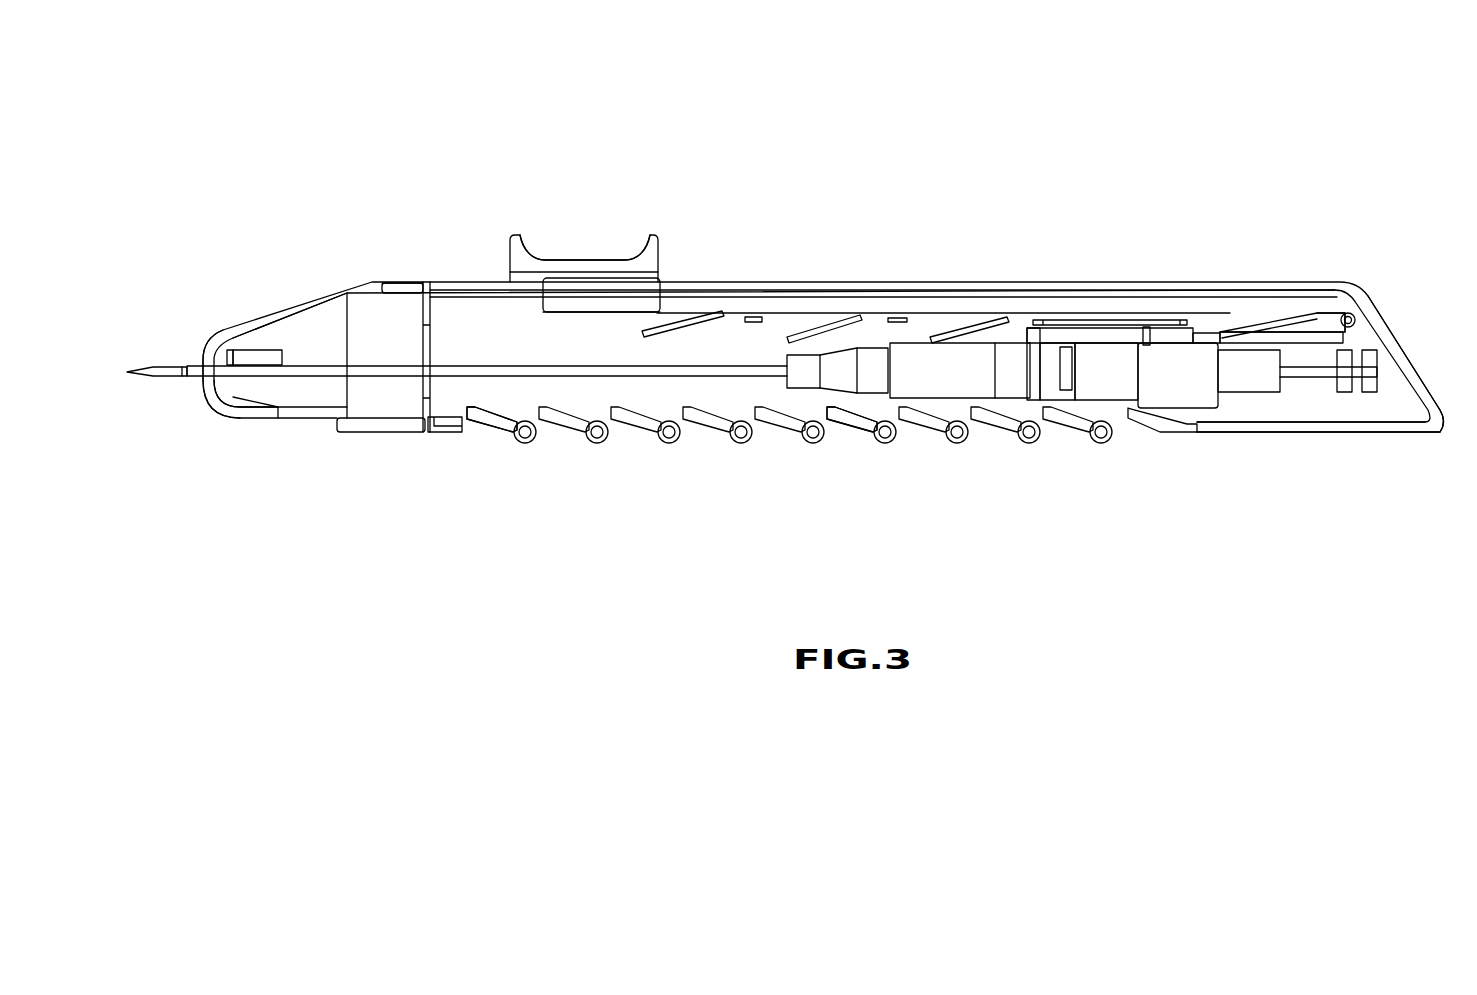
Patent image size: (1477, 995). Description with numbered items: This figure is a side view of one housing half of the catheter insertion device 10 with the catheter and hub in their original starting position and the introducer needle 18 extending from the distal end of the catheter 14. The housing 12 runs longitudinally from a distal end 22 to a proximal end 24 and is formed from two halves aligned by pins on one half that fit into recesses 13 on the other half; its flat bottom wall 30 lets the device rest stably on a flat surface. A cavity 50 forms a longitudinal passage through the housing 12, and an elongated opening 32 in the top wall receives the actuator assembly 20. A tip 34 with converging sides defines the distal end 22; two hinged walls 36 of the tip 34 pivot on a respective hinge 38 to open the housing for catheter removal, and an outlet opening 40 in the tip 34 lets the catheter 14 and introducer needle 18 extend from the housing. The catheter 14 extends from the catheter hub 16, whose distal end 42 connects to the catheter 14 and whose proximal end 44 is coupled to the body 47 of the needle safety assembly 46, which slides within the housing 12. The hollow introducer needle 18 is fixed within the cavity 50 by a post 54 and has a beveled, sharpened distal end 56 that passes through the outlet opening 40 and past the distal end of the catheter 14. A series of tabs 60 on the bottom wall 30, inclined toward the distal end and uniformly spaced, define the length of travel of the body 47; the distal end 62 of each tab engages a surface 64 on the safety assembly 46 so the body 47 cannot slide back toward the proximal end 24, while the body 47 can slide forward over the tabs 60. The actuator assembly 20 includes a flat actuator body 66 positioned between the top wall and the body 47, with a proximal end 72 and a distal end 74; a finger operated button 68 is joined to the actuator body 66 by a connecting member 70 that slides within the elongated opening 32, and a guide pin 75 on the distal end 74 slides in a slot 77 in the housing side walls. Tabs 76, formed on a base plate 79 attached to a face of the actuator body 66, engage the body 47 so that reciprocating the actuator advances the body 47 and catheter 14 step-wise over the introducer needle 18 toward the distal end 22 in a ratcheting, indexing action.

The catheter insertion device 10 is at (440, 125).
The housing 12 is at (1255, 278).
The recesses 13 is at (520, 428).
The catheter 14 is at (200, 380).
The catheter hub 16 is at (843, 347).
The introducer needle 18 is at (136, 377).
The actuator assembly 20 is at (658, 232).
The distal end 22 is at (230, 414).
The proximal end 24 is at (1443, 425).
The flat bottom wall 30 is at (1390, 430).
The elongated opening 32 is at (437, 280).
The tip 34 is at (240, 318).
The hinged walls 36 is at (292, 297).
The hinge 38 is at (427, 343).
The outlet opening 40 is at (208, 365).
The distal end of hub 42 is at (790, 352).
The proximal end of hub 44 is at (1063, 345).
The needle safety assembly 46 is at (1248, 395).
The body 47 is at (1193, 400).
The cavity 50 is at (1325, 402).
The post 54 is at (1378, 352).
The distal end of needle 56 is at (140, 368).
The tabs 60 is at (858, 422).
The distal end of tab 62 is at (832, 421).
The surface 64 is at (1128, 428).
The actuator body 66 is at (895, 298).
The finger operated button 68 is at (527, 256).
The connecting member 70 is at (583, 302).
The proximal end of actuator body 72 is at (545, 300).
The distal end of actuator body 74 is at (1307, 323).
The guide pin 75 is at (1354, 316).
The tabs 76 is at (672, 318).
The slot 77 is at (1310, 326).
The base plate 79 is at (735, 317).